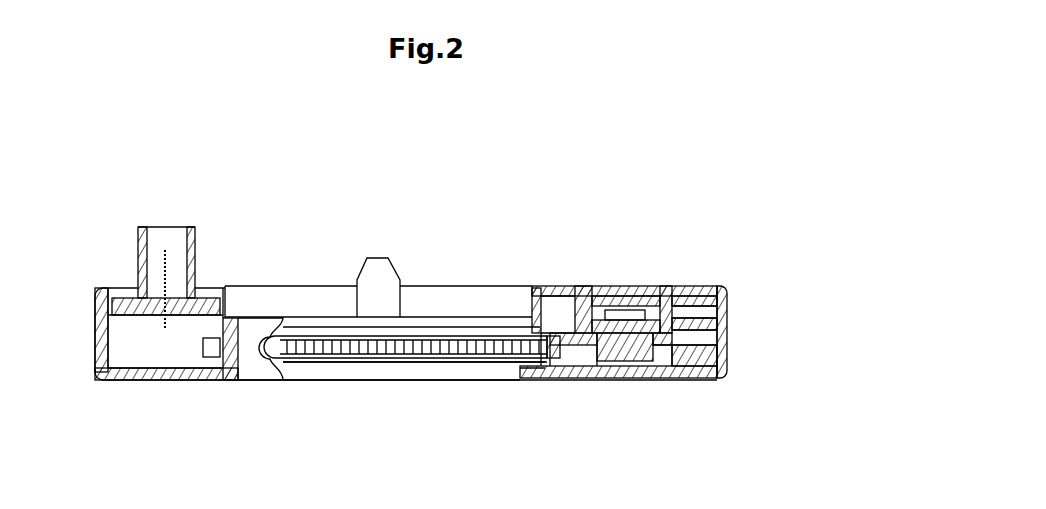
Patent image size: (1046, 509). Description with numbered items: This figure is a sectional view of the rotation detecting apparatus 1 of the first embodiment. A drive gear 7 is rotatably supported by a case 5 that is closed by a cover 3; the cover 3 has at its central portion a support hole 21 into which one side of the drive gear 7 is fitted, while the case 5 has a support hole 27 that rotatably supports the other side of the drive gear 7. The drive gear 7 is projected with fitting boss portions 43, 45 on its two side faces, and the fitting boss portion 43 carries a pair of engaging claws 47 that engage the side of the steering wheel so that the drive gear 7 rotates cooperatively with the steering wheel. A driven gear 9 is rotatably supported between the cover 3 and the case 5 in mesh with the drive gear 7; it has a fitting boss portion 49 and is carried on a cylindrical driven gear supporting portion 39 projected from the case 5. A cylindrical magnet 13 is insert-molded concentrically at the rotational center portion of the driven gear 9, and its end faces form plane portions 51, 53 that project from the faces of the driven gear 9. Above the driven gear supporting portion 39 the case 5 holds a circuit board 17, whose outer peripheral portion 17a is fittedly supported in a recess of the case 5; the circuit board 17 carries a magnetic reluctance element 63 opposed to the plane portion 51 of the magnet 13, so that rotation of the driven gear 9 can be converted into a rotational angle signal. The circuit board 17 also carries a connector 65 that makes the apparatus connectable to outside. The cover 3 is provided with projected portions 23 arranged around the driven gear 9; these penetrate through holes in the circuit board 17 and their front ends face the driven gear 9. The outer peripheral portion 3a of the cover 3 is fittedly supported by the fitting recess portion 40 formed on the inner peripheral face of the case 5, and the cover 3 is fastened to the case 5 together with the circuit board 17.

The rotation detecting apparatus 1 is at (421, 181).
The cover 3 is at (678, 281).
The outer peripheral portion of the cover 3a is at (725, 298).
The case 5 is at (690, 386).
The drive gear 7 is at (397, 348).
The driven gear 9 is at (725, 345).
The magnet 13 is at (617, 367).
The circuit board 17 is at (698, 287).
The outer peripheral portion of the circuit board 17a is at (723, 318).
The support hole 21 is at (525, 302).
The projected portion 23 is at (657, 298).
The support hole 27 is at (520, 368).
The driven gear supporting portion 39 is at (557, 378).
The fitting recess portion 40 is at (720, 283).
The fitting boss portion 43 is at (310, 317).
The fitting boss portion 45 is at (302, 382).
The engaging claw 47 is at (380, 256).
The fitting boss portion 49 is at (590, 367).
The plane portion 51 is at (627, 289).
The plane portion 53 is at (643, 367).
The magnetic reluctance element 63 is at (585, 297).
The connector 65 is at (138, 253).